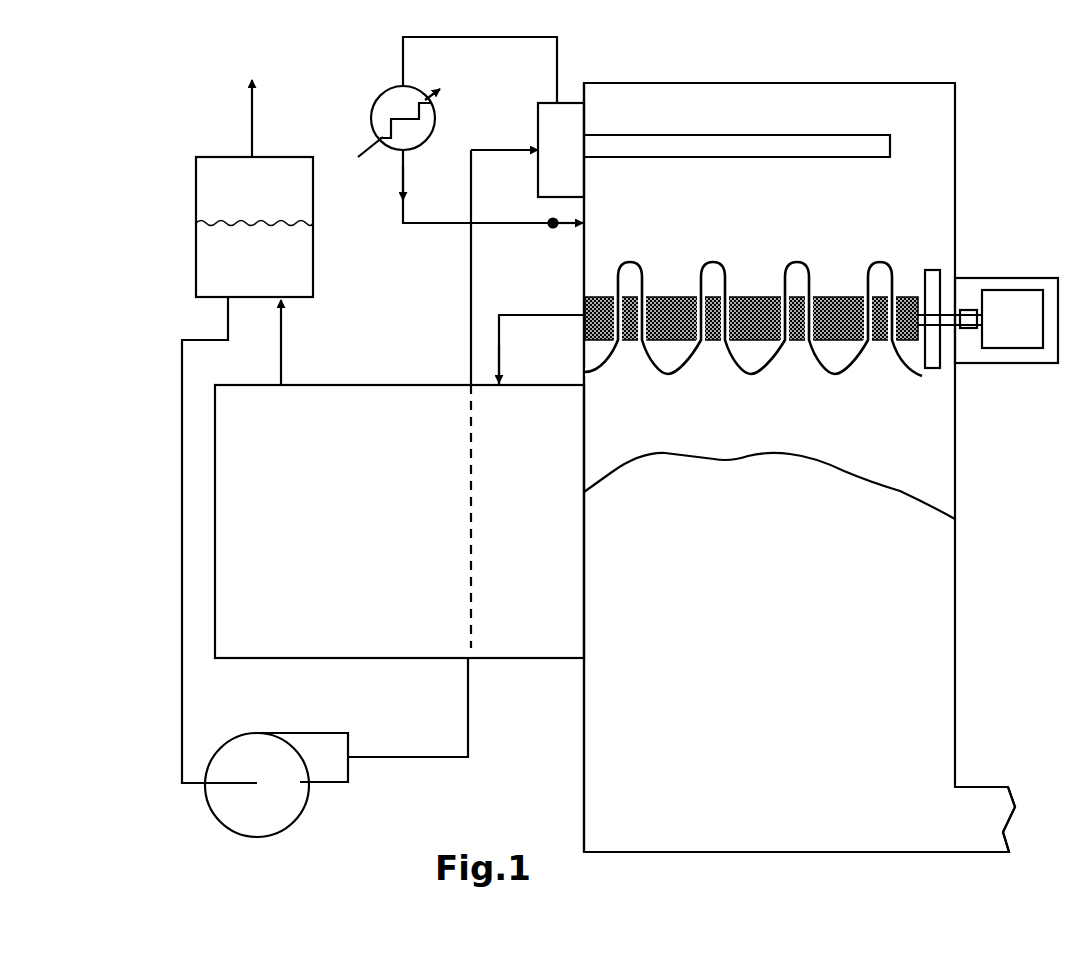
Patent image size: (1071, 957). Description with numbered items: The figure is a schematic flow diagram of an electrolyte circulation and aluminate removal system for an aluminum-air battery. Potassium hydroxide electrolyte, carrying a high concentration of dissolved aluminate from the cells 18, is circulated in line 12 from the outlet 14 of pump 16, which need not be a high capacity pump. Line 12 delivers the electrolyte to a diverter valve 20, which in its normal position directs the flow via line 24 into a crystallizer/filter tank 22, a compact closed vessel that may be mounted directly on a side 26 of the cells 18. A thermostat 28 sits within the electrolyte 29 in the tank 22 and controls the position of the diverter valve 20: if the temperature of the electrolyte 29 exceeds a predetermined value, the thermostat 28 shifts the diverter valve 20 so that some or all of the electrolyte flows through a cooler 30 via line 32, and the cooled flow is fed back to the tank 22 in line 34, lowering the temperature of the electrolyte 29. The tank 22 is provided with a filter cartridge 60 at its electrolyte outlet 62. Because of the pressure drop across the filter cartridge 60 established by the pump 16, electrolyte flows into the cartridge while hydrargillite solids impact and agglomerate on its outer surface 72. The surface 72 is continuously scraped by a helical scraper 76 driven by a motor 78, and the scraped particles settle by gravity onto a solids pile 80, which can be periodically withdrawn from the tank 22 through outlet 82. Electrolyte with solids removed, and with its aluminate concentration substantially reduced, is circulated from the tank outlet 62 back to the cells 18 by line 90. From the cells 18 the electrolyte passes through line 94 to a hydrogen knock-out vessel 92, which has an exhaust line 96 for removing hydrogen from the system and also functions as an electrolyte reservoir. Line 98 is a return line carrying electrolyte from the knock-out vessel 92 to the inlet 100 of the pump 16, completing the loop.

The line 12 is at (470, 685).
The outlet 14 is at (350, 755).
The pump 16 is at (257, 812).
The cells 18 is at (302, 608).
The diverter valve 20 is at (563, 137).
The crystallizer/filter tank 22 is at (955, 445).
The line 24 is at (556, 210).
The side 26 is at (583, 430).
The thermostat 28 is at (770, 148).
The electrolyte 29 is at (925, 222).
The cooler 30 is at (383, 110).
The line 32 is at (560, 63).
The line 34 is at (437, 226).
The filter cartridge 60 is at (753, 324).
The electrolyte outlet 62 is at (583, 315).
The outer surface 72 is at (843, 338).
The helical scraper 76 is at (675, 358).
The motor 78 is at (1012, 336).
The solids pile 80 is at (770, 638).
The outlet 82 is at (970, 787).
The line 90 is at (499, 345).
The hydrogen knock-out vessel 92 is at (313, 258).
The line 94 is at (283, 348).
The exhaust line 96 is at (250, 128).
The return line 98 is at (183, 520).
The inlet 100 is at (207, 781).